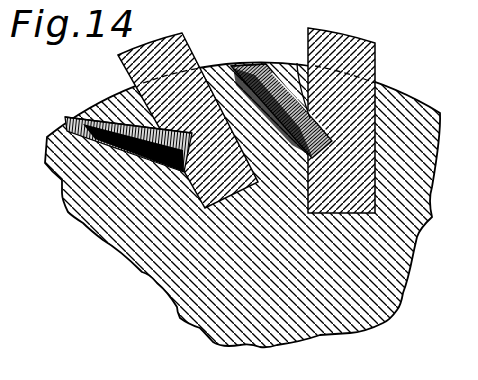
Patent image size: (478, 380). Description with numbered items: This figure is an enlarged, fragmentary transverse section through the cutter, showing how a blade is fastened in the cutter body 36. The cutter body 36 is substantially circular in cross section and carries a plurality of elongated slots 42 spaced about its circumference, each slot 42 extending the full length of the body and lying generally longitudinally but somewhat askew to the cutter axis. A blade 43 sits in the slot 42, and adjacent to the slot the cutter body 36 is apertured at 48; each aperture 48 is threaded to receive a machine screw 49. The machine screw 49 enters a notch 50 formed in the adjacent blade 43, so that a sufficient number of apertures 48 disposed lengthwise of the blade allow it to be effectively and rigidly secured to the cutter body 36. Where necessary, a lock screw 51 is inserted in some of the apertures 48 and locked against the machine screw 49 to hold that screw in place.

The cutter body 36 is at (177, 287).
The elongated slot 42 is at (370, 116).
The blade 43 is at (192, 29).
The aperture 48 is at (88, 118).
The machine screw 49 is at (297, 63).
The notch 50 is at (322, 118).
The lock screw 51 is at (100, 115).